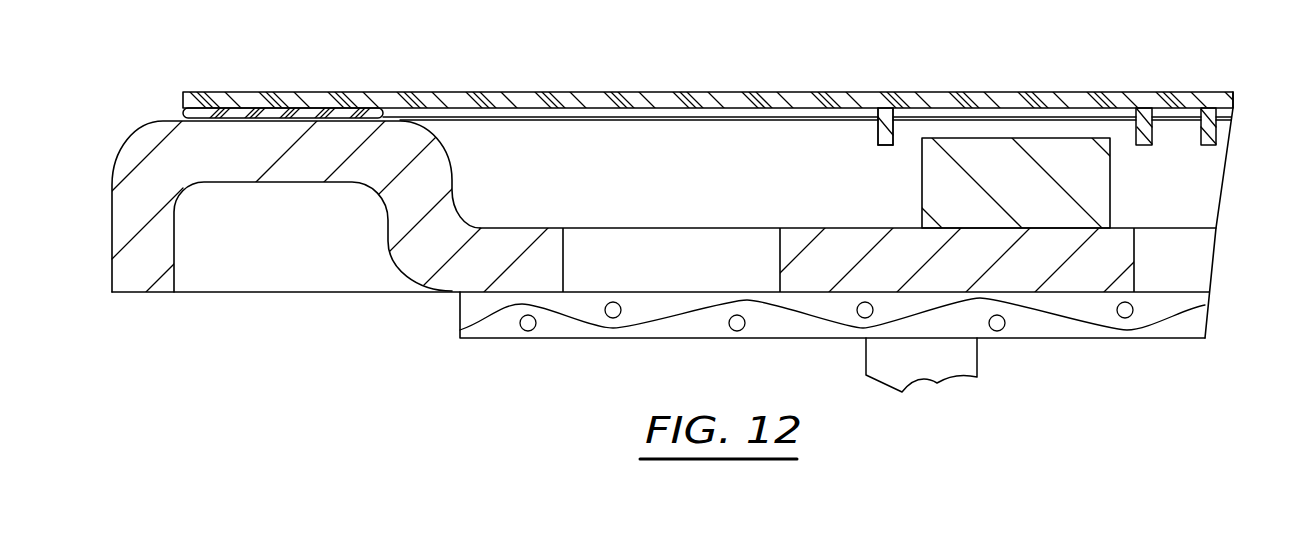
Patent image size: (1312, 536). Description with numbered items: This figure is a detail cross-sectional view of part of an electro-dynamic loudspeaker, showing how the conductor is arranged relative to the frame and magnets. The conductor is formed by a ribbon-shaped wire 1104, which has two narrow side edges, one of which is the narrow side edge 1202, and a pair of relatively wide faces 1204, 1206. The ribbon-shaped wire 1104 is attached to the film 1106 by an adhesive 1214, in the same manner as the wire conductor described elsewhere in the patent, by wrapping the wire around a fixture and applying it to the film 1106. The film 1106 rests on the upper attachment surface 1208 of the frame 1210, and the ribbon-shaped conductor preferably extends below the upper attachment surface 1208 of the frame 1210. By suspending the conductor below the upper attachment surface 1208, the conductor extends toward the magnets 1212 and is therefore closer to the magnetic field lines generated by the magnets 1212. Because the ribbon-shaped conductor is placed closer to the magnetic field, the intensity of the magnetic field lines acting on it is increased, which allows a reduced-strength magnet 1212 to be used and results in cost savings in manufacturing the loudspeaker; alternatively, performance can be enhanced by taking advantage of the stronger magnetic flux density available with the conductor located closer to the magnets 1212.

The film 1106 is at (430, 92).
The ribbon-shaped wire 1104 is at (900, 116).
The upper attachment surface 1208 is at (157, 121).
The frame 1210 is at (116, 217).
The adhesive 1214 is at (877, 110).
The wide face 1204 is at (878, 128).
The wide face 1206 is at (893, 135).
The narrow side edge 1202 is at (883, 146).
The magnet 1212 is at (1143, 210).